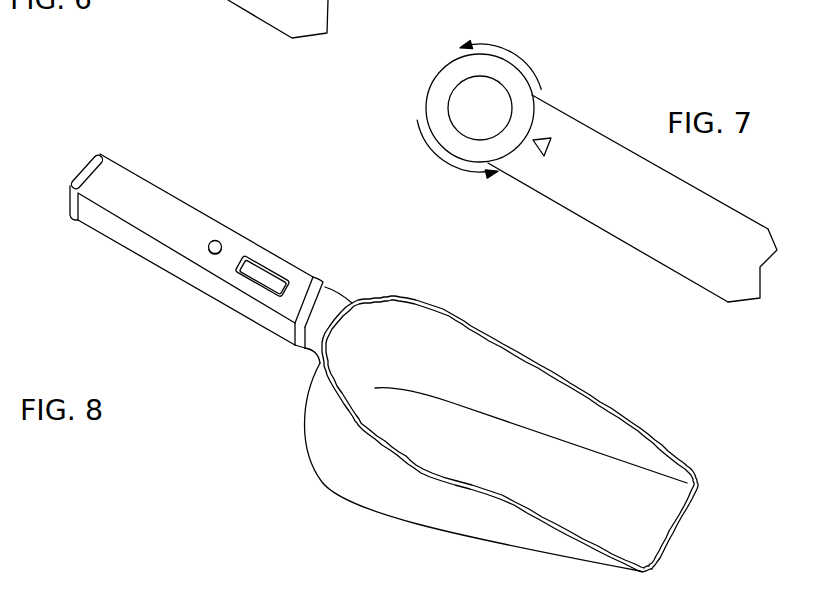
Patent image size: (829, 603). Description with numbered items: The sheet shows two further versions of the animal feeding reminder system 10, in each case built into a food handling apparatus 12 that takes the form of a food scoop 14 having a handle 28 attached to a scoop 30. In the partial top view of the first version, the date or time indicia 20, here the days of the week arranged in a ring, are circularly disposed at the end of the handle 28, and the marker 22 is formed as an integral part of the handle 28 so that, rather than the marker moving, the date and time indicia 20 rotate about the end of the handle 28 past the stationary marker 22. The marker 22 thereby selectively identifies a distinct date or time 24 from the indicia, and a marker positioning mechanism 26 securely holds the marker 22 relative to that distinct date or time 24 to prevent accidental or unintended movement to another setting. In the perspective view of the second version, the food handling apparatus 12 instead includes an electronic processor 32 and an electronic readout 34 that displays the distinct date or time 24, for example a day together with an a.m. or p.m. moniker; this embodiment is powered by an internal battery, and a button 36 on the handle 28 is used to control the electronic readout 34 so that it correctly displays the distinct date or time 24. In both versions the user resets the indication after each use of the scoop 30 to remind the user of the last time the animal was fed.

In FIG. 8, the animal feeding reminder system 10 is at (384, 356).
In FIG. 8, the food handling apparatus 12 is at (384, 356).
In FIG. 8, the food scoop 14 is at (205, 442).
In FIG. 7, the date or time indicia 20 is at (487, 90).
In FIG. 7, the marker 22 is at (573, 126).
In FIG. 7, the distinct date or time 24 is at (532, 113).
In FIG. 8, the distinct date or time 24 is at (296, 263).
In FIG. 7, the marker positioning mechanism 26 is at (486, 183).
In FIG. 7, the handle 28 is at (632, 198).
In FIG. 8, the handle 28 is at (191, 231).
In FIG. 8, the scoop 30 is at (502, 429).
In FIG. 8, the electronic processor 32 is at (196, 267).
In FIG. 8, the electronic readout 34 is at (296, 263).
In FIG. 8, the button 36 is at (243, 224).